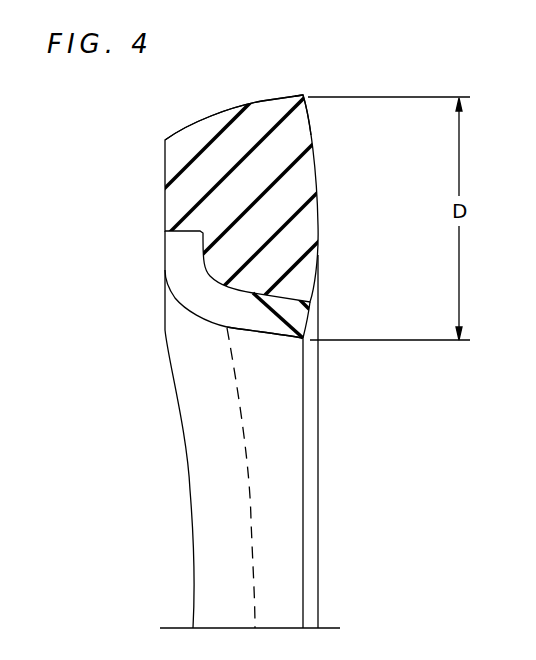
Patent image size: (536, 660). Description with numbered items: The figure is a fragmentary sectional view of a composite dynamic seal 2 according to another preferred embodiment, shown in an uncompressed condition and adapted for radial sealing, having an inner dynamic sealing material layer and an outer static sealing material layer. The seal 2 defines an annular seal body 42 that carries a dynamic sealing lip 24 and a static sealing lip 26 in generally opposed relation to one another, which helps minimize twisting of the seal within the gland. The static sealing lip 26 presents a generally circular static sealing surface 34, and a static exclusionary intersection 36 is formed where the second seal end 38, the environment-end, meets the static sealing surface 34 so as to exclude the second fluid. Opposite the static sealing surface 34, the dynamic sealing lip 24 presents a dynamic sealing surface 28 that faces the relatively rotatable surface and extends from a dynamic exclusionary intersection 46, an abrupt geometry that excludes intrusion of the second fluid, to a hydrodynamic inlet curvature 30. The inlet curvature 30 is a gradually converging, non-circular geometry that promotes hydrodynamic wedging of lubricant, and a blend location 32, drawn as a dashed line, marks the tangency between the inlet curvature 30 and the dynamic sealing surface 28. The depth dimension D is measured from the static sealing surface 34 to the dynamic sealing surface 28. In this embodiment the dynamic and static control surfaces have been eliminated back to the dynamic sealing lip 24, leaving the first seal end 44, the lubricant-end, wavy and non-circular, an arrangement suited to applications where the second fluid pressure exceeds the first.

The dynamic seal 2 is at (138, 167).
The static sealing surface 34 is at (271, 98).
The static sealing lip 26 is at (290, 100).
The static exclusionary intersection 36 is at (304, 96).
The annular seal body 42 is at (278, 160).
The second seal end 38 is at (320, 217).
The hydrodynamic inlet curvature 30 is at (197, 328).
The dynamic exclusionary intersection 46 is at (303, 340).
The dynamic sealing lip 24 is at (278, 326).
The dynamic sealing surface 28 is at (255, 326).
The first seal end 44 is at (185, 488).
The blend location 32 is at (245, 495).